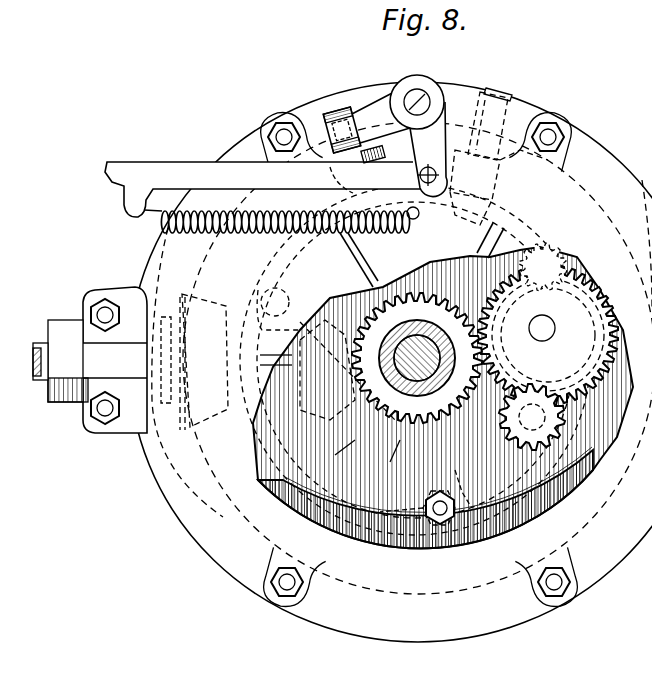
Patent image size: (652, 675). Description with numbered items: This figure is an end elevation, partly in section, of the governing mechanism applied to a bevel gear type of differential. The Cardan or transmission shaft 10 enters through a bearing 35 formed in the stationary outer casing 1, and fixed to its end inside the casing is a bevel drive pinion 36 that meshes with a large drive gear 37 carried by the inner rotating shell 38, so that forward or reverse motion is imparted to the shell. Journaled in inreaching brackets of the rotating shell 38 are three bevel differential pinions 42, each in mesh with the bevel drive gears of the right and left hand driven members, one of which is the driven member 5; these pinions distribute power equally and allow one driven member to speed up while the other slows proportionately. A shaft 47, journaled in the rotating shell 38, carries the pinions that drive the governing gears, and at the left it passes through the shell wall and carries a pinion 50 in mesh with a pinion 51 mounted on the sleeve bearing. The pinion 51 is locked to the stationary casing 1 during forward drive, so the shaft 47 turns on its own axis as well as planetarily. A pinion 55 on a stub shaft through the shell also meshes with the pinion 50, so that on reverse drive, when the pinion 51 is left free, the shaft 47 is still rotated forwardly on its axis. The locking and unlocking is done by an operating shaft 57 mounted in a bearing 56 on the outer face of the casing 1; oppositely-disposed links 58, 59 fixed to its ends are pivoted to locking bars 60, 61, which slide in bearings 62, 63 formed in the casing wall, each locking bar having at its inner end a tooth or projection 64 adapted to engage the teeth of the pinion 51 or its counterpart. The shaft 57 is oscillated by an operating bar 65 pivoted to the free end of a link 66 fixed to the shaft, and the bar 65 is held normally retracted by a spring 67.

The stationary outer casing 1 is at (606, 162).
The left hand driven member 5 is at (373, 438).
The Cardan or transmission shaft 10 is at (40, 346).
The bearing 35 is at (70, 410).
The bevel drive pinion 36 is at (225, 308).
The large drive gear 37 is at (440, 592).
The inner rotating shell 38 is at (350, 525).
The bevel differential pinions 42 is at (428, 250).
The shaft 47 is at (546, 340).
The pinion 50 is at (588, 285).
The pinion 51 is at (360, 412).
The pinion 55 is at (520, 448).
The bearing 56 is at (421, 75).
The operating shaft 57 is at (447, 92).
The link 58 is at (480, 92).
The link 59 is at (382, 106).
The locking bar 60 is at (506, 94).
The locking bar 61 is at (334, 114).
The bearing 62 is at (495, 195).
The bearing 63 is at (350, 150).
The tooth or projection 64 is at (414, 288).
The operating bar 65 is at (186, 170).
The link 66 is at (436, 150).
The spring 67 is at (296, 224).